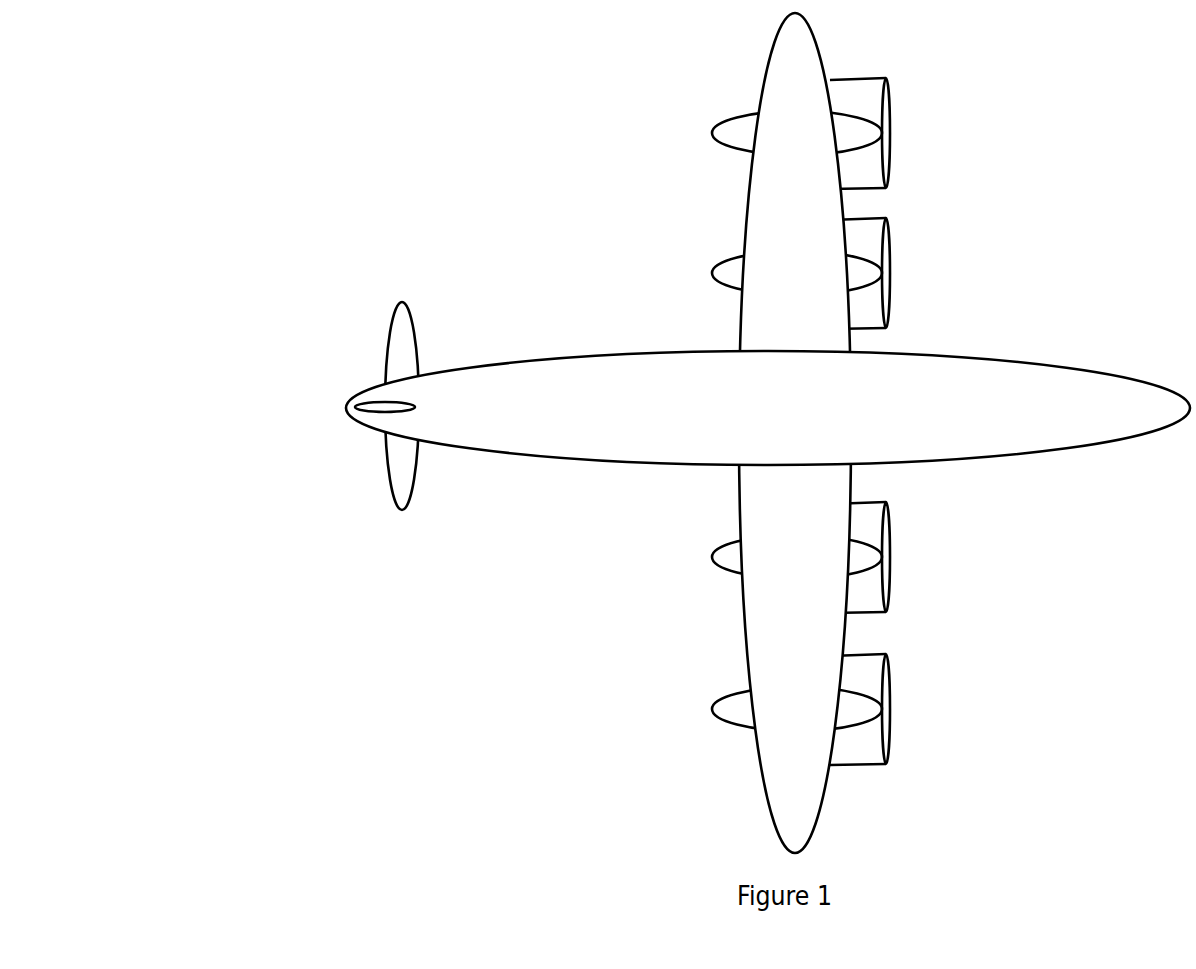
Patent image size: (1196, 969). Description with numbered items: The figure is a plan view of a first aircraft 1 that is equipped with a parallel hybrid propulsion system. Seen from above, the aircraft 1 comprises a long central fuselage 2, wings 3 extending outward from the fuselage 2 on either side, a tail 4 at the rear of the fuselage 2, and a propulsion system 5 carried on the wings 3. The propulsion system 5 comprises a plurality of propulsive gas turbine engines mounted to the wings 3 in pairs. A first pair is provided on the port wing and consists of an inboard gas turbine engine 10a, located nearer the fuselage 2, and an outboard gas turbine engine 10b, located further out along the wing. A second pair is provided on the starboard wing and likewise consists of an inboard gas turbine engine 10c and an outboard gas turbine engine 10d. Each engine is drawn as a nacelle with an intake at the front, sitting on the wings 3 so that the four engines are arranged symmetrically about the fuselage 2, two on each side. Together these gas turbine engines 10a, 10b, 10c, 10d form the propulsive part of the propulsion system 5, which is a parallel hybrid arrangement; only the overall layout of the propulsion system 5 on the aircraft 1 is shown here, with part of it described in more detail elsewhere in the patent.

The aircraft 1 is at (1053, 193).
The fuselage 2 is at (572, 349).
The wings 3 is at (737, 535).
The tail 4 is at (387, 479).
The propulsion system 5 is at (693, 81).
The inboard gas turbine engine 10a is at (742, 256).
The outboard gas turbine engine 10b is at (715, 133).
The inboard gas turbine engine 10c is at (852, 580).
The outboard gas turbine engine 10d is at (857, 728).